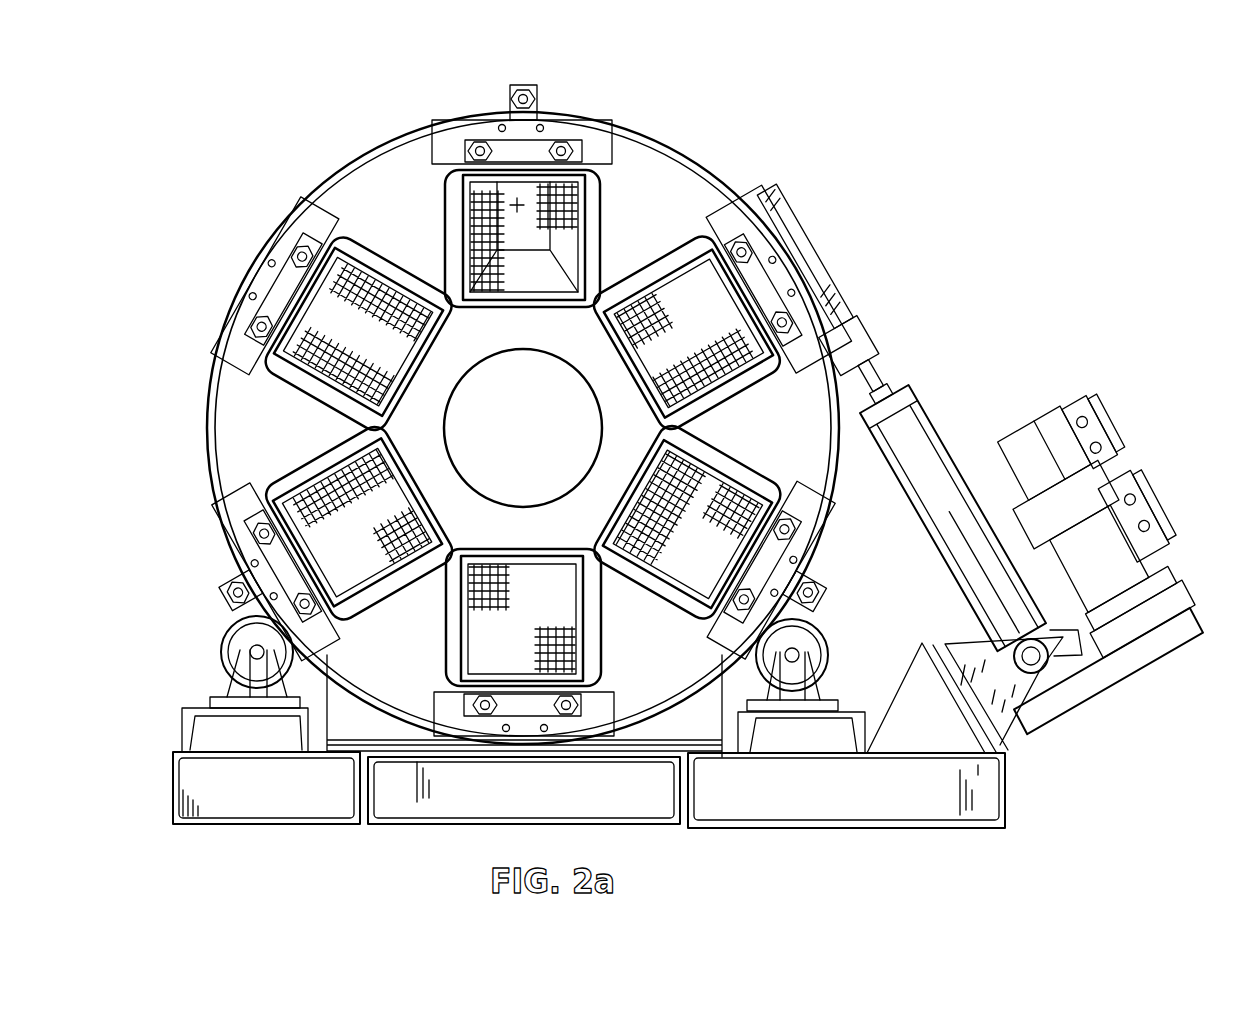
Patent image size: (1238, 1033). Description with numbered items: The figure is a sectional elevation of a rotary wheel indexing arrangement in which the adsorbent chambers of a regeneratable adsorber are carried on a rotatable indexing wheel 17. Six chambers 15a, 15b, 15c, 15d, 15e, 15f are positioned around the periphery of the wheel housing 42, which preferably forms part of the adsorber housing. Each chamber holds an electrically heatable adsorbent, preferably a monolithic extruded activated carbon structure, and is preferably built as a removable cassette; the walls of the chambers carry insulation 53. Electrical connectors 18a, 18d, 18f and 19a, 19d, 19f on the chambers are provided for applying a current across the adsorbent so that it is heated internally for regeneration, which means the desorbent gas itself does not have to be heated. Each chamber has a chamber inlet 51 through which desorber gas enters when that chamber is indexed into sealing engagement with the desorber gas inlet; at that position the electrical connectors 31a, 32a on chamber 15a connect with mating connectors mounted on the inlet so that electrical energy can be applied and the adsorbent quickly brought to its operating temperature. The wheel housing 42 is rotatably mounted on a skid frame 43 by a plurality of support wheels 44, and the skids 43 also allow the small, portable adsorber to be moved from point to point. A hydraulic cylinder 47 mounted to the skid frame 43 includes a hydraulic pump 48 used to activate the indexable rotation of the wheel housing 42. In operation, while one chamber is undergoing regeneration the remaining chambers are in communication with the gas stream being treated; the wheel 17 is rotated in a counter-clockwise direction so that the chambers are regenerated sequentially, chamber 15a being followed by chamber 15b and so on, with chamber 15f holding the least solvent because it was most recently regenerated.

The rotatable indexing wheel 17 is at (326, 150).
The wheel housing 42 is at (699, 149).
The chamber 15a is at (600, 168).
The chamber 15b is at (712, 295).
The chamber 15c is at (766, 568).
The chamber 15d is at (532, 690).
The chamber 15e is at (297, 482).
The chamber 15f is at (290, 287).
The electrical connector 18a is at (452, 212).
The electrical connector 18d is at (596, 640).
The electrical connector 18f is at (293, 372).
The electrical connector 19a is at (596, 250).
The electrical connector 19d is at (457, 640).
The electrical connector 19f is at (382, 262).
The electrical connector 31a is at (498, 123).
The electrical connector 32a is at (543, 123).
The chamber inlet 51 is at (593, 233).
The insulation 53 is at (737, 458).
The skid frame 43 is at (1005, 797).
The support wheels 44 is at (228, 642).
The hydraulic cylinder 47 is at (910, 410).
The hydraulic pump 48 is at (1157, 570).